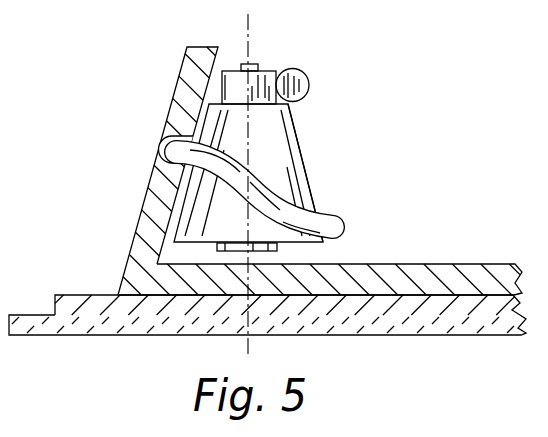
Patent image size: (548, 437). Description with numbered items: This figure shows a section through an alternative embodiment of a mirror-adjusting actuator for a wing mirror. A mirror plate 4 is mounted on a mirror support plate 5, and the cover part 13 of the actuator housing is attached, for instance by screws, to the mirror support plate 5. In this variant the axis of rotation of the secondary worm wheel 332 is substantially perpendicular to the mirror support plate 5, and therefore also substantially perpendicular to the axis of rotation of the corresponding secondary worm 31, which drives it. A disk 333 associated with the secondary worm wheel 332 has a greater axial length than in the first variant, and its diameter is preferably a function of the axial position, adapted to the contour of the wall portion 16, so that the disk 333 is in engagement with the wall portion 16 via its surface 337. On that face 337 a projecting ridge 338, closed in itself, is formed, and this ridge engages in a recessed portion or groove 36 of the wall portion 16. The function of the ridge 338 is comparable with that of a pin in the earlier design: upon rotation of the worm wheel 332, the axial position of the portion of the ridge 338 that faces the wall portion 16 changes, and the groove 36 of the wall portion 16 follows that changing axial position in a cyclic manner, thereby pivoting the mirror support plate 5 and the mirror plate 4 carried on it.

The mirror plate 4 is at (68, 331).
The mirror support plate 5 is at (85, 296).
The cover part 13 is at (444, 272).
The wall portion 16 is at (148, 220).
The secondary worm 31 is at (310, 82).
The groove 36 is at (160, 142).
The secondary worm wheel 332 is at (222, 87).
The disk 333 is at (291, 168).
The surface 337 is at (294, 127).
The projecting ridge 338 is at (329, 214).